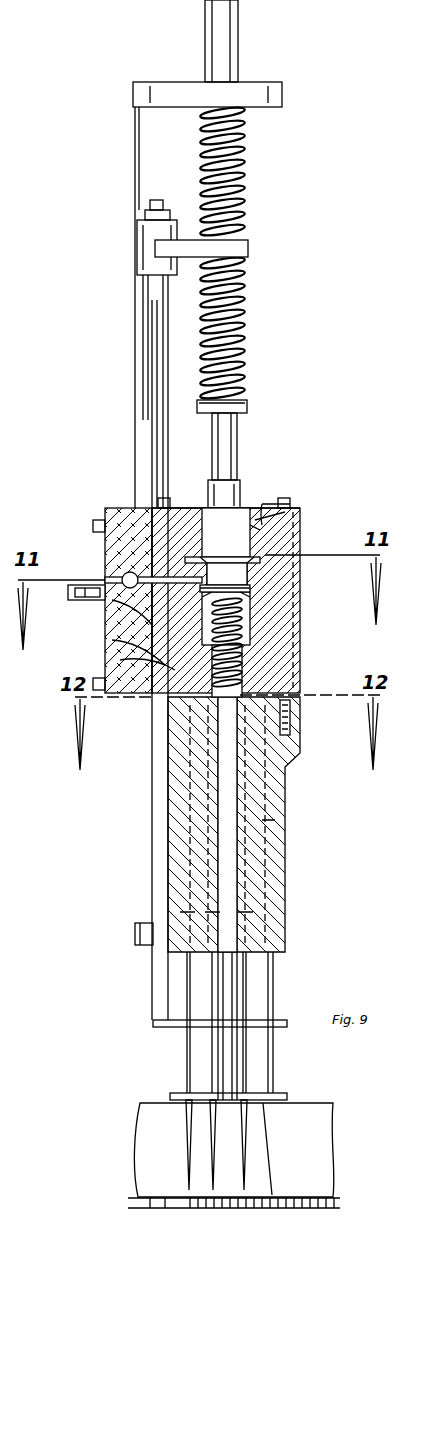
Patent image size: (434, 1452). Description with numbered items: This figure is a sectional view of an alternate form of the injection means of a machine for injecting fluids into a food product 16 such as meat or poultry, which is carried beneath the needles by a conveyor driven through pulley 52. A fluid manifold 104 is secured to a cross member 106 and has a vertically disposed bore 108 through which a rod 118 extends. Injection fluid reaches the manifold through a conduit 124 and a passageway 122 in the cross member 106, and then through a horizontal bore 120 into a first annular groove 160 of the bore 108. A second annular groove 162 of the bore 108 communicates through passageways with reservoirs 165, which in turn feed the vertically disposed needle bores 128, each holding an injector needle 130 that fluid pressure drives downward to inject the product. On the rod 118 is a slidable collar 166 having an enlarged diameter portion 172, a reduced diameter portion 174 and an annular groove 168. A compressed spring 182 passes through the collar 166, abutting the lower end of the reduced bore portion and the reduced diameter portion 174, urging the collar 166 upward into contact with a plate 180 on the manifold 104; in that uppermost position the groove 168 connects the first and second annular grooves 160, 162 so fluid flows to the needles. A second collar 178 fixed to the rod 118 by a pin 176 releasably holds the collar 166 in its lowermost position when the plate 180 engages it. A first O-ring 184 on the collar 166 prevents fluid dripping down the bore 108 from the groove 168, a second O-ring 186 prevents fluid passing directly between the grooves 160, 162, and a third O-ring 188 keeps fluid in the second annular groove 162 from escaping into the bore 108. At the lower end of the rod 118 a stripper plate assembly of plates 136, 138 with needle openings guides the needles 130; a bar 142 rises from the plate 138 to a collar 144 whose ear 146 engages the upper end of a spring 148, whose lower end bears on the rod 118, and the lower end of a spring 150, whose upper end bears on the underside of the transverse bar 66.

The food product 16 is at (328, 1163).
The pulley 52 is at (322, 1200).
The bar 66 is at (280, 108).
The fluid manifold 104 is at (244, 725).
The cross member 106 is at (109, 600).
The bore 108 is at (130, 642).
The rod 118 is at (238, 452).
The horizontal bore 120 is at (150, 622).
The passageway 122 is at (105, 598).
The conduit 124 is at (122, 576).
The needle bore 128 is at (280, 802).
The injector needle 130 is at (210, 1060).
The plate 136 is at (178, 1093).
The plate 138 is at (172, 1028).
The bar 142 is at (148, 292).
The collar 144 is at (137, 268).
The ear 146 is at (250, 250).
The spring 148 is at (246, 270).
The spring 150 is at (260, 253).
The first annular groove 160 is at (248, 612).
The second annular groove 162 is at (250, 575).
The reservoir 165 is at (291, 708).
The collar 166 is at (265, 530).
The annular groove 168 is at (252, 596).
The enlarged diameter portion 172 is at (300, 512).
The reduced diameter portion 174 is at (240, 488).
The pin 176 is at (248, 398).
The second collar 178 is at (253, 401).
The plate 180 is at (285, 505).
The compressed spring 182 is at (160, 657).
The first O-ring 184 is at (244, 641).
The second O-ring 186 is at (252, 588).
The third O-ring 188 is at (262, 560).